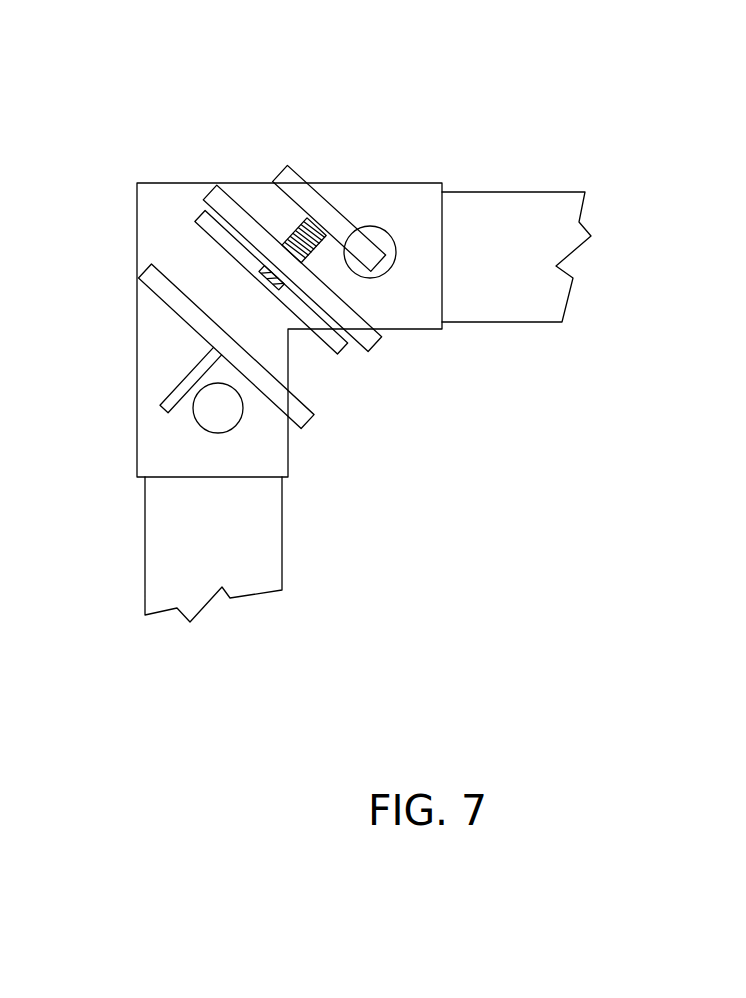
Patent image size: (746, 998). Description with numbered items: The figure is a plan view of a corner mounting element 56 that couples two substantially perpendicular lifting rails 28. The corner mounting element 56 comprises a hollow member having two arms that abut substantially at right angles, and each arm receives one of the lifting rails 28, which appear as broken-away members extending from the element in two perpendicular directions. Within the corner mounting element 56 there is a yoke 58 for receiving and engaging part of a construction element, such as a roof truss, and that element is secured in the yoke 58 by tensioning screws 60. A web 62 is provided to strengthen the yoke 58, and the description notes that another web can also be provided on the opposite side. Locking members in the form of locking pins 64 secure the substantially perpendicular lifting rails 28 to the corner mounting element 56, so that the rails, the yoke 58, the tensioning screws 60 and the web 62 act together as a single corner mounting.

The lifting rail 28 is at (527, 251).
The corner mounting element 56 is at (472, 110).
The yoke 58 is at (207, 183).
The tensioning screws 60 is at (342, 213).
The web 62 is at (173, 387).
The locking pins 64 is at (394, 272).